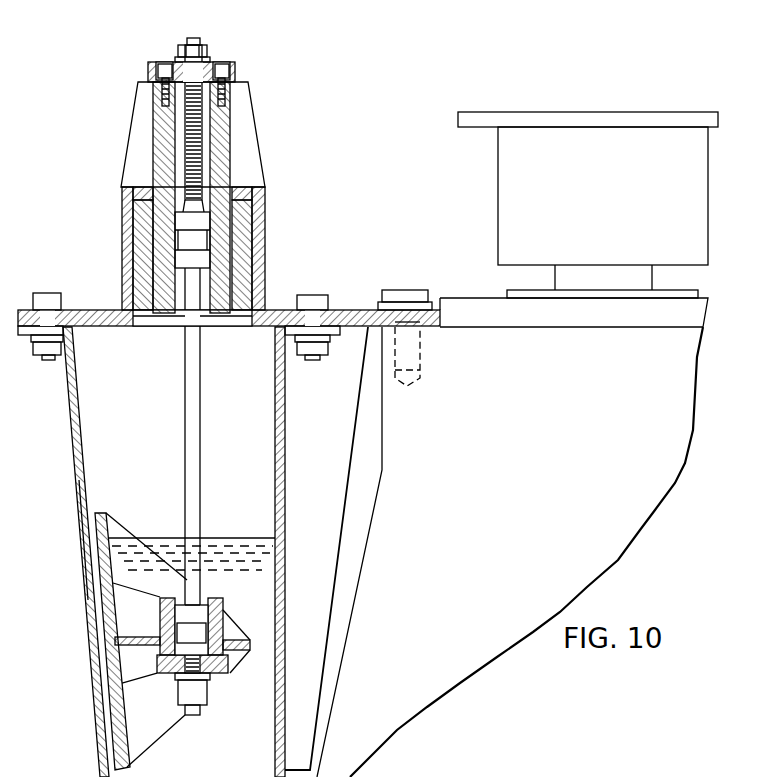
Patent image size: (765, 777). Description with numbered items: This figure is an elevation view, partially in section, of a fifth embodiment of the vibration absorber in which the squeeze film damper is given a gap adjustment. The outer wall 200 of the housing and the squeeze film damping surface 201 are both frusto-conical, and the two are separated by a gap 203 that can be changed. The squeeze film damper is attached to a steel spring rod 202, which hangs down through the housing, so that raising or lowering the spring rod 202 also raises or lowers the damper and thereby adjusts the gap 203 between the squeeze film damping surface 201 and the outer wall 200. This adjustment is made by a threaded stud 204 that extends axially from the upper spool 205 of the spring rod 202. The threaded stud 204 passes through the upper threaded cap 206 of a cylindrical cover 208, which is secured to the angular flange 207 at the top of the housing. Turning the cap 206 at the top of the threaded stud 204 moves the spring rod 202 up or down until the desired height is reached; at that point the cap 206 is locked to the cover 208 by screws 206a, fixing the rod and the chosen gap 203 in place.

The outer wall 200 is at (86, 562).
The squeeze film damping surface 201 is at (94, 527).
The spring rod 202 is at (201, 430).
The gap 203 is at (92, 512).
The threaded stud 204 is at (198, 41).
The upper spool 205 is at (201, 238).
The upper threaded cap 206 is at (237, 72).
The screws 206a is at (163, 97).
The angular flange 207 is at (86, 312).
The cylindrical cover 208 is at (320, 160).